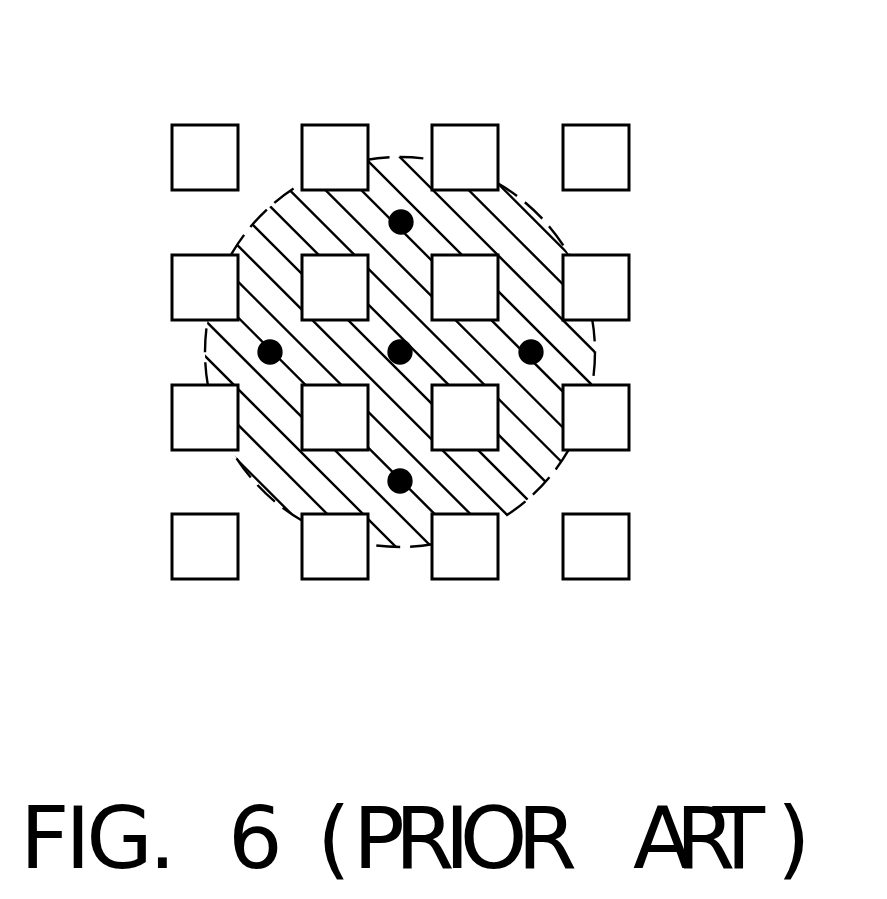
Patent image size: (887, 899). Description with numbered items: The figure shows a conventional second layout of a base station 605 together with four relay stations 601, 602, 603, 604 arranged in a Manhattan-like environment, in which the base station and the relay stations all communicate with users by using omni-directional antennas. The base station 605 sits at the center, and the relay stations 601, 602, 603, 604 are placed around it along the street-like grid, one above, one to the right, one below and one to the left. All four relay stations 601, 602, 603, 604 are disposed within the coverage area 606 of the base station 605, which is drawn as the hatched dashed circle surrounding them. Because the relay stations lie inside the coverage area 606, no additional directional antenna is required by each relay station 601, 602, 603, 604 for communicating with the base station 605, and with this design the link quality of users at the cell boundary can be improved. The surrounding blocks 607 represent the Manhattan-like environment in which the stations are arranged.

The relay station 601 is at (400, 340).
The relay station 602 is at (543, 350).
The relay station 603 is at (400, 492).
The relay station 604 is at (258, 352).
The base station 605 is at (402, 338).
The coverage area 606 is at (291, 191).
The pixel cell 607 is at (205, 125).